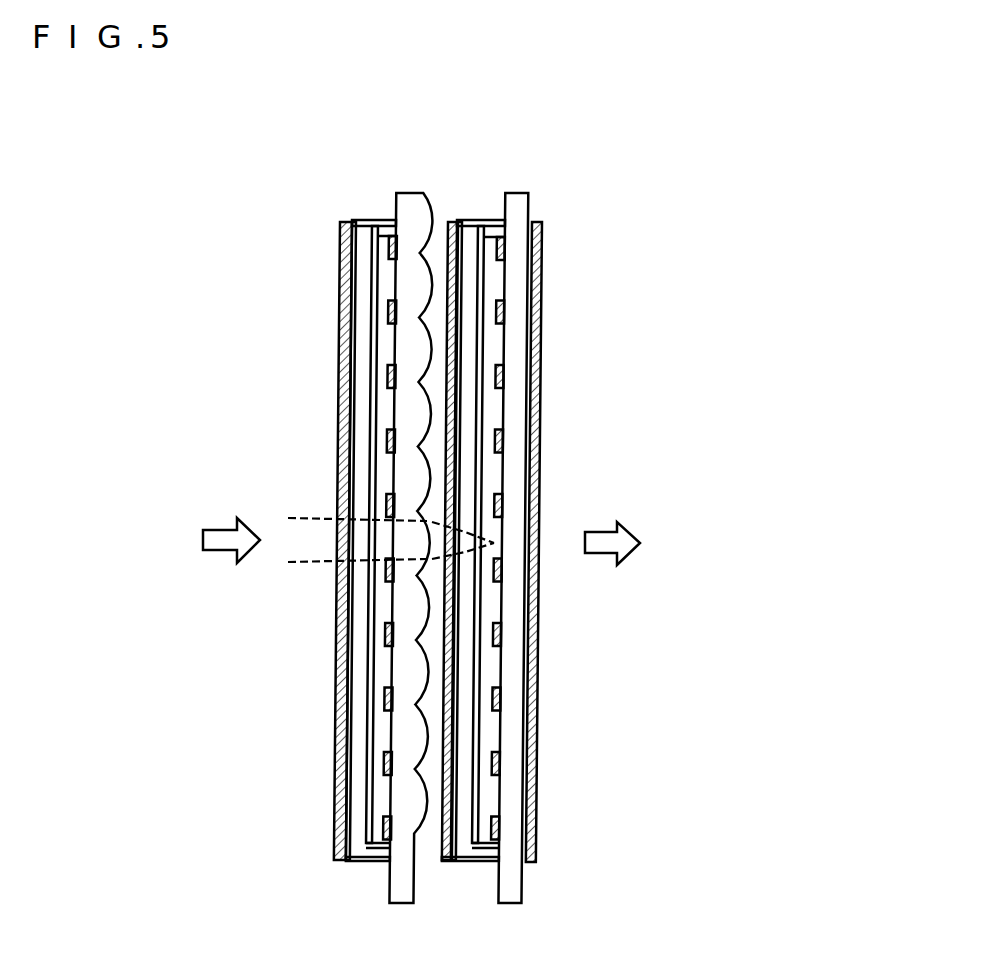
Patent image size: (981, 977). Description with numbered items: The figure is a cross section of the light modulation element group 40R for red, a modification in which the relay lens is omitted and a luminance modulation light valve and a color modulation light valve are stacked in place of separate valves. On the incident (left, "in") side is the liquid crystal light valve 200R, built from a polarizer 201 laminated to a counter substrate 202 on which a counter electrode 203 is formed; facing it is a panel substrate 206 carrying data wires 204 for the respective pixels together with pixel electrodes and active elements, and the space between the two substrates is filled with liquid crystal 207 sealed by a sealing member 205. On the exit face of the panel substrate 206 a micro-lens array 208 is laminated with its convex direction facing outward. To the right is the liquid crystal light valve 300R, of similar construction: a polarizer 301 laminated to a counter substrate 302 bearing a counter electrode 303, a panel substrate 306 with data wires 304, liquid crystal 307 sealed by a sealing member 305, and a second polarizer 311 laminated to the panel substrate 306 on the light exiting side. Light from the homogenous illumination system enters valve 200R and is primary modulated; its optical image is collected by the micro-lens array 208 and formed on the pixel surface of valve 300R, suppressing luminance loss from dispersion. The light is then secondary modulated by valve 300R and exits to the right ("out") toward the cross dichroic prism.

The light modulation element group 40R is at (683, 133).
The liquid crystal light valve (luminance modulation light valve) 200R is at (335, 917).
The liquid crystal light valve (color modulation light valve) 300R is at (445, 917).
The polarizer 201 is at (341, 238).
The counter substrate 202 is at (353, 222).
The counter electrode 203 is at (372, 300).
The data wires 204 is at (388, 250).
The sealing member 205 is at (366, 226).
The panel substrate 206 is at (388, 221).
The liquid crystal 207 is at (388, 735).
The micro-lens array 208 is at (421, 192).
The polarizer 301 is at (452, 222).
The counter substrate 302 is at (473, 222).
The counter electrode 303 is at (482, 415).
The data wires 304 is at (506, 250).
The sealing member 305 is at (503, 194).
The panel substrate 306 is at (522, 210).
The liquid crystal 307 is at (500, 678).
The polarizer 311 is at (545, 310).